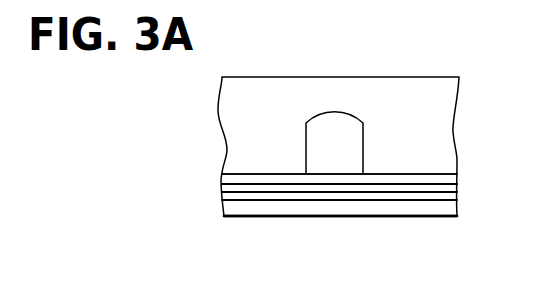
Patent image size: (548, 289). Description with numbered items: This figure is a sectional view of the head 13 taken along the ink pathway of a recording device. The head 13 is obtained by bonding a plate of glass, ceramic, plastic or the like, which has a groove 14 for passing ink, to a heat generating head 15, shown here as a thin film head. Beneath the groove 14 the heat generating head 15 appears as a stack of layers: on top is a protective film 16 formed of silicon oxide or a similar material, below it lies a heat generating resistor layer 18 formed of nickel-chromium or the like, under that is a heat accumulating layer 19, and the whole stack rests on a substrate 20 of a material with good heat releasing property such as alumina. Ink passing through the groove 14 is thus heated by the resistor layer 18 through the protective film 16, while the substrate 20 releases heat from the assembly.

The head 13 is at (295, 77).
The groove 14 is at (352, 115).
The heat generating head 15 is at (477, 165).
The protective film 16 is at (420, 178).
The heat generating resistor layer 18 is at (429, 187).
The heat accumulating layer 19 is at (447, 197).
The substrate 20 is at (397, 205).